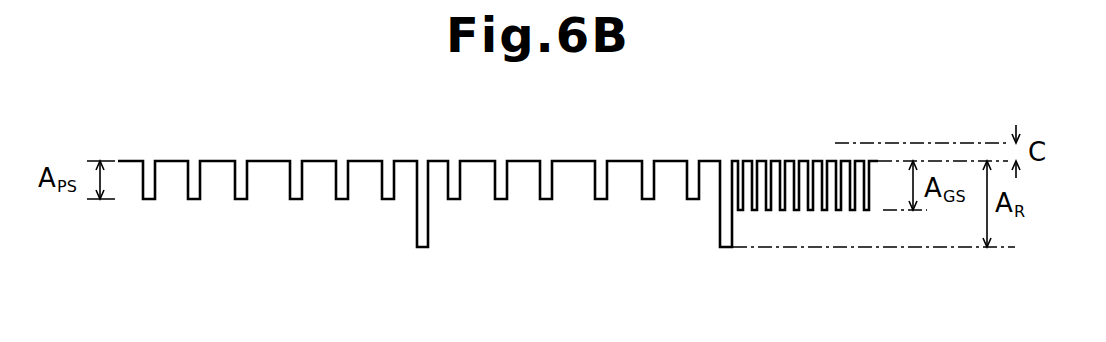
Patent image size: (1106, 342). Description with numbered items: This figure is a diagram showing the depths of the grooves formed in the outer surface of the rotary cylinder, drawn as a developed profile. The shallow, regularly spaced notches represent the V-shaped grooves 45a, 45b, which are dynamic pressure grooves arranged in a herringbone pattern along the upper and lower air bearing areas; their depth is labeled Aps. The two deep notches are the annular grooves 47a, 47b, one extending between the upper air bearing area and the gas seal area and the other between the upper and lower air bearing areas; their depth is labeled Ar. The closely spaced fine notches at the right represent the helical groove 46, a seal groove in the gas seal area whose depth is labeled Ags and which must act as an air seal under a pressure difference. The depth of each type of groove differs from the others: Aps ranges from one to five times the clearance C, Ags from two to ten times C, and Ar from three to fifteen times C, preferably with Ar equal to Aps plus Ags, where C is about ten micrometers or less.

The V-shaped groove 45a is at (603, 172).
The V-shaped groove 45b is at (346, 172).
The helical groove 46 is at (792, 161).
The annular groove 47a is at (721, 170).
The annular groove 47b is at (420, 170).